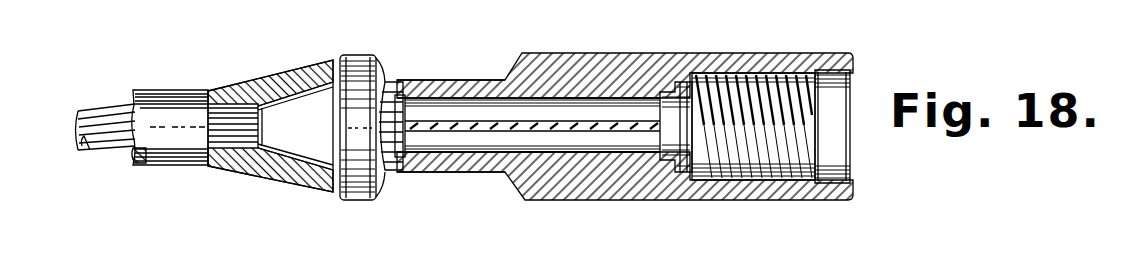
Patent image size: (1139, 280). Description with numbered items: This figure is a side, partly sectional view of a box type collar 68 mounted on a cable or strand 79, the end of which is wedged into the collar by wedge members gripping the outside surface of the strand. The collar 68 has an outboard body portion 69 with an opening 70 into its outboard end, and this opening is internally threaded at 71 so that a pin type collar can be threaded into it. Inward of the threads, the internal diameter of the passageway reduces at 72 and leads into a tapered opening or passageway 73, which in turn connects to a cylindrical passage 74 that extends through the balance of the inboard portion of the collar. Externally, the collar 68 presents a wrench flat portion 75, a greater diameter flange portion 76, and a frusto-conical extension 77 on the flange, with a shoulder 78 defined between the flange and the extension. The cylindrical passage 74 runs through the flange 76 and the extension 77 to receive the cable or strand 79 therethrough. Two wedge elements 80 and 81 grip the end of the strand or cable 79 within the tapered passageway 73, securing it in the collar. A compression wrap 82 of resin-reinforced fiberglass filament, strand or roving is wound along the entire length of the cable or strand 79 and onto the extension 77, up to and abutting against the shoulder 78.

The collar 68 is at (456, 63).
The outboard body portion 69 is at (673, 55).
The opening 70 is at (854, 80).
The internal threads 71 is at (747, 174).
The passageway diameter reduction 72 is at (668, 172).
The tapered passageway 73 is at (596, 100).
The cylindrical passage 74 is at (400, 170).
The wrench flat portion 75 is at (479, 174).
The flange portion 76 is at (363, 55).
The frusto-conical extension 77 is at (271, 108).
The shoulder 78 is at (320, 67).
The cable or strand 79 is at (104, 112).
The wedge element 80 is at (437, 107).
The wedge element 81 is at (500, 154).
The compression wrap 82 is at (170, 168).